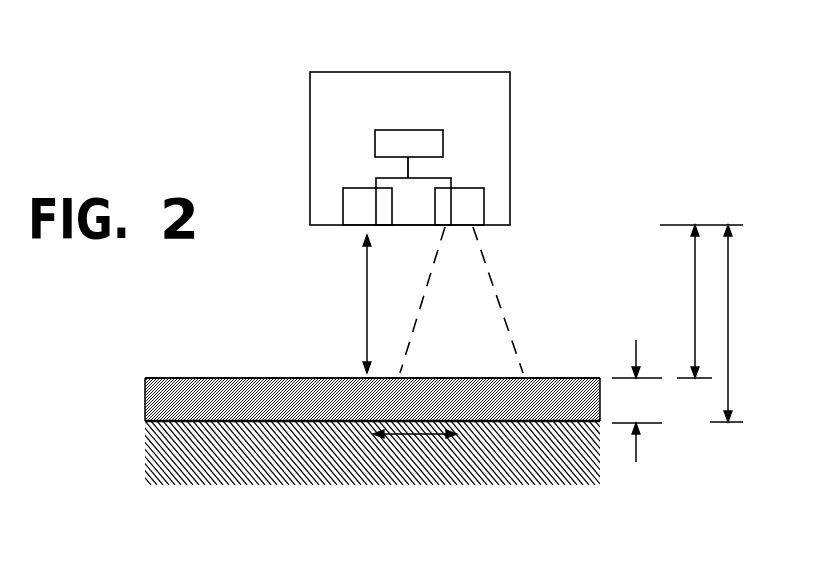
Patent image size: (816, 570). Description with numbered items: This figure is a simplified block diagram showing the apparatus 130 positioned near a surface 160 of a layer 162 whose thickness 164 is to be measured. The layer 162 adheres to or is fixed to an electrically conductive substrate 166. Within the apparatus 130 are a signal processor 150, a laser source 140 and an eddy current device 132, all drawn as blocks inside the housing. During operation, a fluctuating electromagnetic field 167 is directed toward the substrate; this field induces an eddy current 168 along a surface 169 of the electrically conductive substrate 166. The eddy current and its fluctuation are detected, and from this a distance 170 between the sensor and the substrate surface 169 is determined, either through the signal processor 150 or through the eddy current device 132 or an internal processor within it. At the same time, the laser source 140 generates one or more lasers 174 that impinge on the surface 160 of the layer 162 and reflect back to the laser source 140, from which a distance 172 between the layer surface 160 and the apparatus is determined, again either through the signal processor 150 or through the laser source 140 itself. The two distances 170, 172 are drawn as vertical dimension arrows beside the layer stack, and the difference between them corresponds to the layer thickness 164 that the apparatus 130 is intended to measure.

The apparatus 130 is at (459, 80).
The signal processor 150 is at (375, 142).
The laser source 140 is at (355, 197).
The eddy current device 132 is at (477, 190).
The laser 174 is at (367, 287).
The electromagnetic field 167 is at (500, 292).
The surface 160 is at (160, 372).
The layer 162 is at (133, 397).
The surface of the electrically conductive substrate 169 is at (135, 422).
The electrically conductive substrate 166 is at (133, 464).
The eddy current 168 is at (408, 434).
The thickness 164 is at (637, 389).
The distance 172 is at (693, 275).
The distance 170 is at (727, 255).